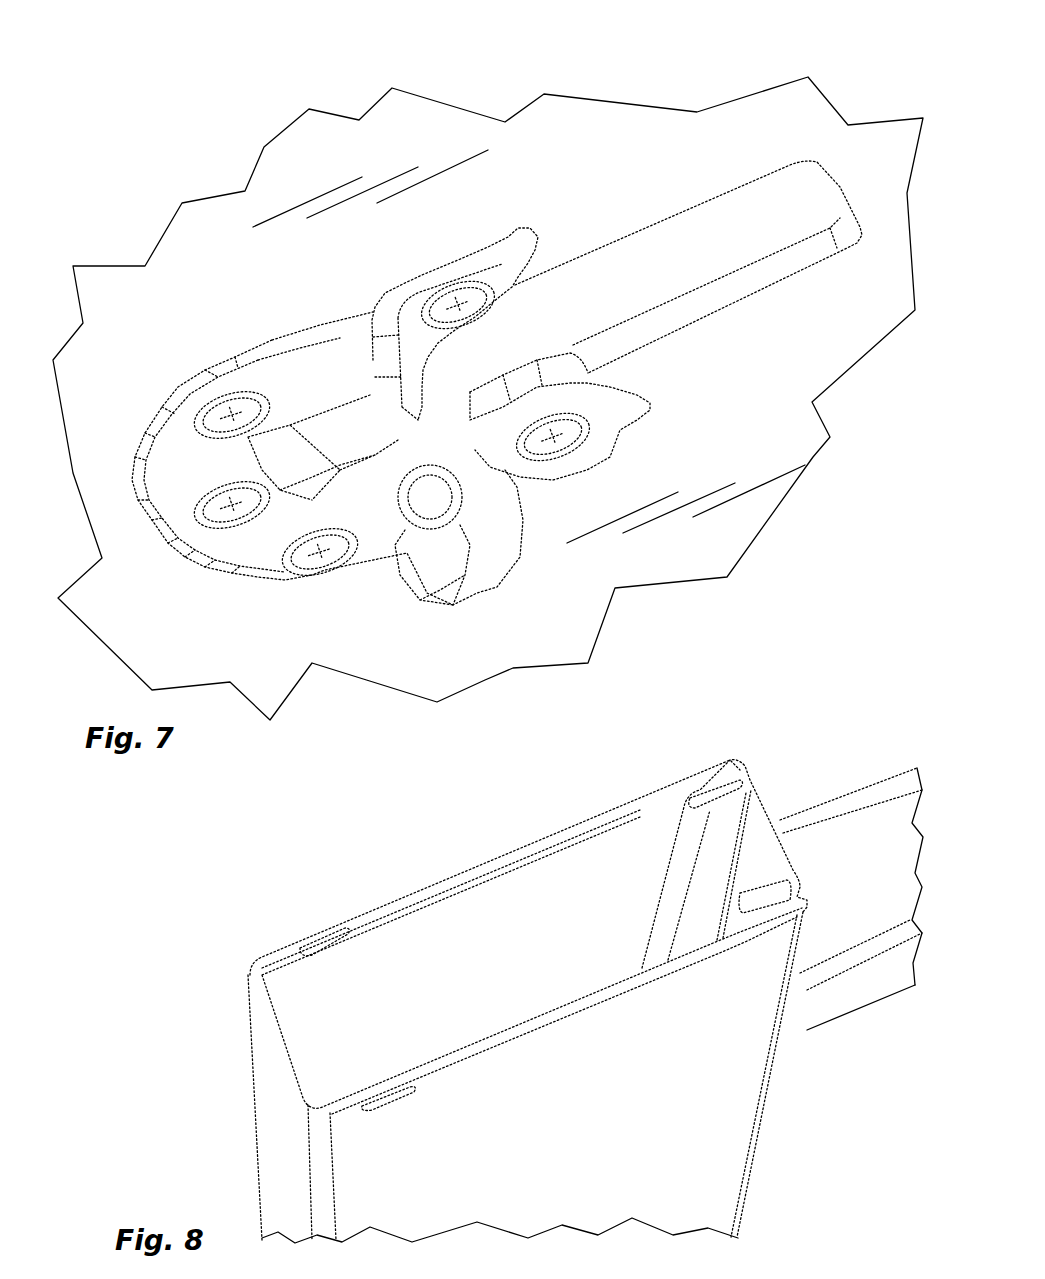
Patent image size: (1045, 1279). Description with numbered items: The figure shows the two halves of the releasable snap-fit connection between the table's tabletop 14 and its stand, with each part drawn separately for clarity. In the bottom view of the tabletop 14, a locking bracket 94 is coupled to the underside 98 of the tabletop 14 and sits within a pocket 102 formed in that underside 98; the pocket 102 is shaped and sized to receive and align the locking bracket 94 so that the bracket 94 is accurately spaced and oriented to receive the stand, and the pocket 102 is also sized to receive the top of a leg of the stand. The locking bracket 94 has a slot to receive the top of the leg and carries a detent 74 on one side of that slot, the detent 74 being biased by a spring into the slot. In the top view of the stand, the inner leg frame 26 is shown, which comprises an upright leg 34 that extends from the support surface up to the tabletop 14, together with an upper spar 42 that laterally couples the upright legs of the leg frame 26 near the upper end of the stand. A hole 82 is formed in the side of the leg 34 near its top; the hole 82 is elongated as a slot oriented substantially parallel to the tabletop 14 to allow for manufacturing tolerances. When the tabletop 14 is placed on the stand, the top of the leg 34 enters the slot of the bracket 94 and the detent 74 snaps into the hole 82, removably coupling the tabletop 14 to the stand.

In FIG. 7, the tabletop 14 is at (592, 135).
In FIG. 7, the underside of the tabletop 98 is at (758, 125).
In FIG. 7, the locking bracket 94 is at (328, 343).
In FIG. 7, the detent 74 is at (440, 508).
In FIG. 7, the pocket 102 is at (742, 278).
In FIG. 8, the inner leg frame 26 is at (752, 1100).
In FIG. 8, the hole 82 is at (308, 958).
In FIG. 8, the upright leg 34 is at (723, 1162).
In FIG. 8, the upper spar 42 is at (852, 800).